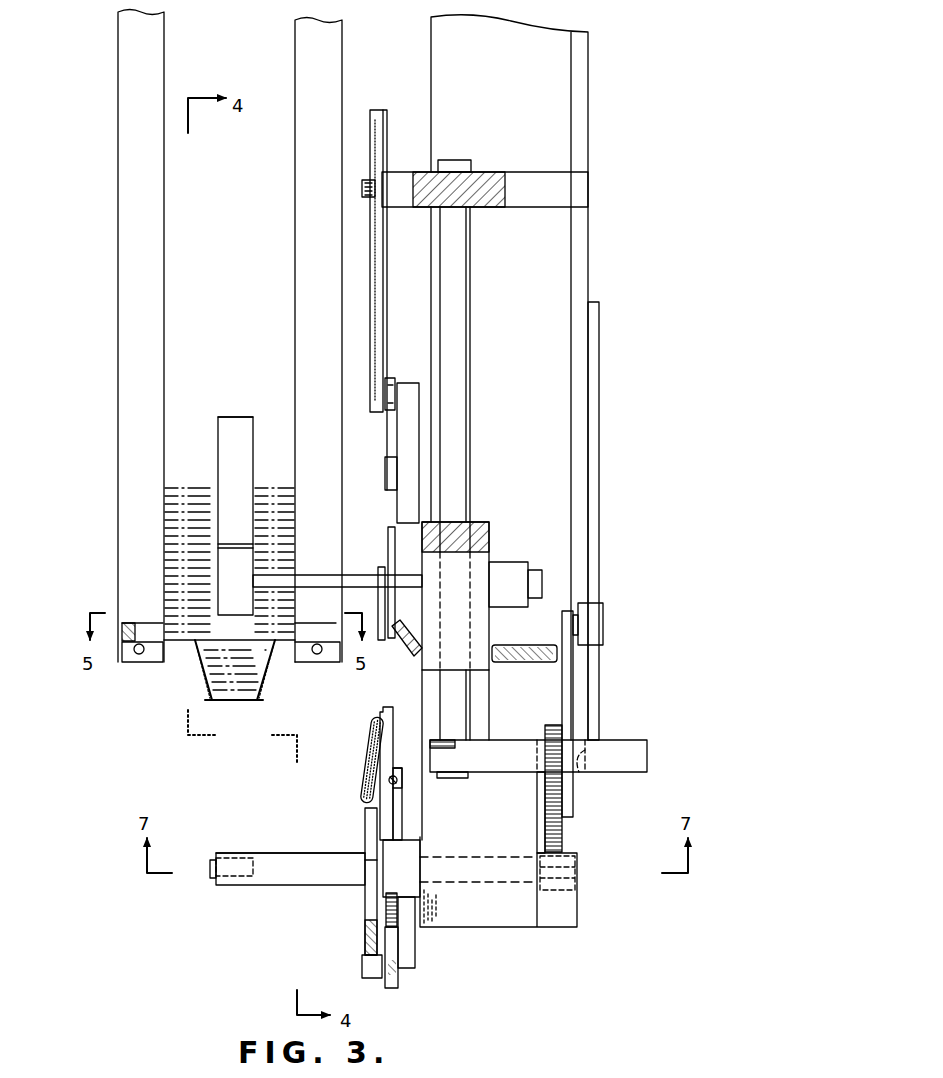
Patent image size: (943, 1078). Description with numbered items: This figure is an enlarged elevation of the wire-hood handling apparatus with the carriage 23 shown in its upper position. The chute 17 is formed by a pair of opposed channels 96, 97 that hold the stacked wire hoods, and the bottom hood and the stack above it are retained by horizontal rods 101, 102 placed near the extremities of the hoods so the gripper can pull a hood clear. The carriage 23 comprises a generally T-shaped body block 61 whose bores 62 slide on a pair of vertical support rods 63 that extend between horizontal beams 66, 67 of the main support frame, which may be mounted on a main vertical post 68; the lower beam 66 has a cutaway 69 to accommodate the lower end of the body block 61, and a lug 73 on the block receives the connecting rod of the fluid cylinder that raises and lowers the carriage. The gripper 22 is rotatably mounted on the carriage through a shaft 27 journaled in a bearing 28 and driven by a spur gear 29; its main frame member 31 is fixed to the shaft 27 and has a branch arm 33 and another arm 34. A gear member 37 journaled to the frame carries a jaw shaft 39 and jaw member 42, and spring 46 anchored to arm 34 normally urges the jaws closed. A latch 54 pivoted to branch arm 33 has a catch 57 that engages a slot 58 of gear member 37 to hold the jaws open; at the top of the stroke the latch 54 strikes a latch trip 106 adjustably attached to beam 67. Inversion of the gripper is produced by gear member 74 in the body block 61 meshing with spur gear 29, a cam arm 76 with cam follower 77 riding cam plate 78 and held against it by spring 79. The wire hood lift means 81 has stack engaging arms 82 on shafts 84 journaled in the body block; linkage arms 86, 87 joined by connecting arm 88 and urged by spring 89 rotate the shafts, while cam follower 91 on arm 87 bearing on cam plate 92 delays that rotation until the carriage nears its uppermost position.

The chute 17 is at (116, 439).
The gripper 22 is at (285, 891).
The carriage 23 is at (488, 519).
The shaft 27 is at (446, 861).
The bearing 28 is at (488, 861).
The spur gear 29 is at (566, 854).
The main frame member 31 is at (412, 843).
The branch arm 33 is at (413, 950).
The arm 34 is at (387, 707).
The gear member 37 is at (365, 913).
The jaw shaft 39 is at (302, 853).
The jaw member 42 is at (216, 859).
The spring 46 is at (367, 753).
The latch 54 is at (398, 980).
The catch 57 is at (362, 970).
The slot 58 is at (365, 940).
The body block 61 is at (498, 918).
The bores 62 is at (463, 582).
The vertical support rods 63 is at (470, 340).
The horizontal beam 66 is at (642, 759).
The horizontal beam 67 is at (582, 192).
The main vertical beam 68 is at (583, 96).
The cutaway 69 is at (580, 771).
The lug 73 is at (490, 534).
The gear member 74 is at (563, 832).
The cam arm 76 is at (564, 710).
The cam follower 77 is at (603, 637).
The cam plate 78 is at (598, 540).
The spring 79 is at (534, 665).
The wire hood lift means 81 is at (220, 414).
The stack engaging arms 82 is at (248, 472).
The shaft 84 is at (374, 578).
The linkage arm 86 is at (378, 598).
The linkage arm 87 is at (412, 450).
The connecting arm 88 is at (398, 612).
The spring 89 is at (416, 644).
The cam follower 91 is at (390, 384).
The cam plate 92 is at (370, 327).
The channel 96 is at (118, 330).
The channel 97 is at (300, 318).
The horizontal rod 101 is at (139, 656).
The horizontal rod 102 is at (318, 656).
The latch trip 106 is at (392, 492).